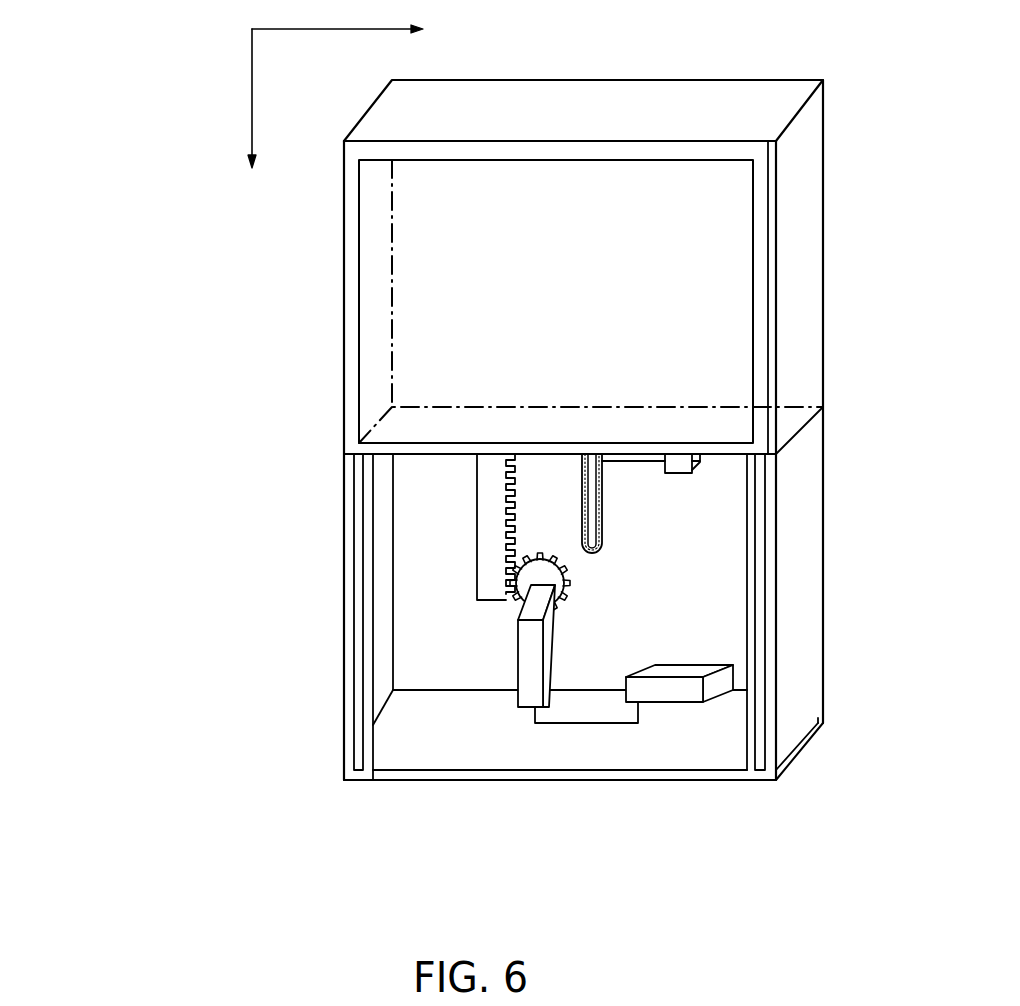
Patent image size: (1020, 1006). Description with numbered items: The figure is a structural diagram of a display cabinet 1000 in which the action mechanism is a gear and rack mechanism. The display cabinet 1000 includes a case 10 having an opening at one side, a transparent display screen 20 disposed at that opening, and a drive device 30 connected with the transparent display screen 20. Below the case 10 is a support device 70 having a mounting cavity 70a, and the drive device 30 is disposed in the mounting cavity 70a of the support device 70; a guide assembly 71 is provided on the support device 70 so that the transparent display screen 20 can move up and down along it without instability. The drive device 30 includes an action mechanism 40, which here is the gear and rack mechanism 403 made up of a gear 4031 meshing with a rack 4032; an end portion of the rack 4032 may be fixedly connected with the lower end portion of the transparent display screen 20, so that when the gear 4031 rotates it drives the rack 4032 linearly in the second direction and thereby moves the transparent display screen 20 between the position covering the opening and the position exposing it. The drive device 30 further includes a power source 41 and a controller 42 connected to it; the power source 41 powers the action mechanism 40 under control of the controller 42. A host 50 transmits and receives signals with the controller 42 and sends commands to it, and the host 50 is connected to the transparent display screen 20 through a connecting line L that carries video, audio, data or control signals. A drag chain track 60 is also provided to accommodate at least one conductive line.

The display cabinet 1000 is at (217, 38).
The case 10 is at (808, 179).
The transparent display screen 20 is at (776, 283).
The drive device 30 is at (92, 452).
The action mechanism 40 is at (178, 502).
The gear and rack mechanism 403 is at (242, 487).
The rack 4032 is at (492, 528).
The gear 4031 is at (544, 575).
The power source 41 is at (533, 682).
The controller 42 is at (668, 688).
The host 50 is at (703, 460).
The drag chain track 60 is at (602, 505).
The connecting line L is at (637, 462).
The support device 70 is at (802, 621).
The mounting cavity 70a is at (452, 634).
The guide assembly 71 is at (760, 663).